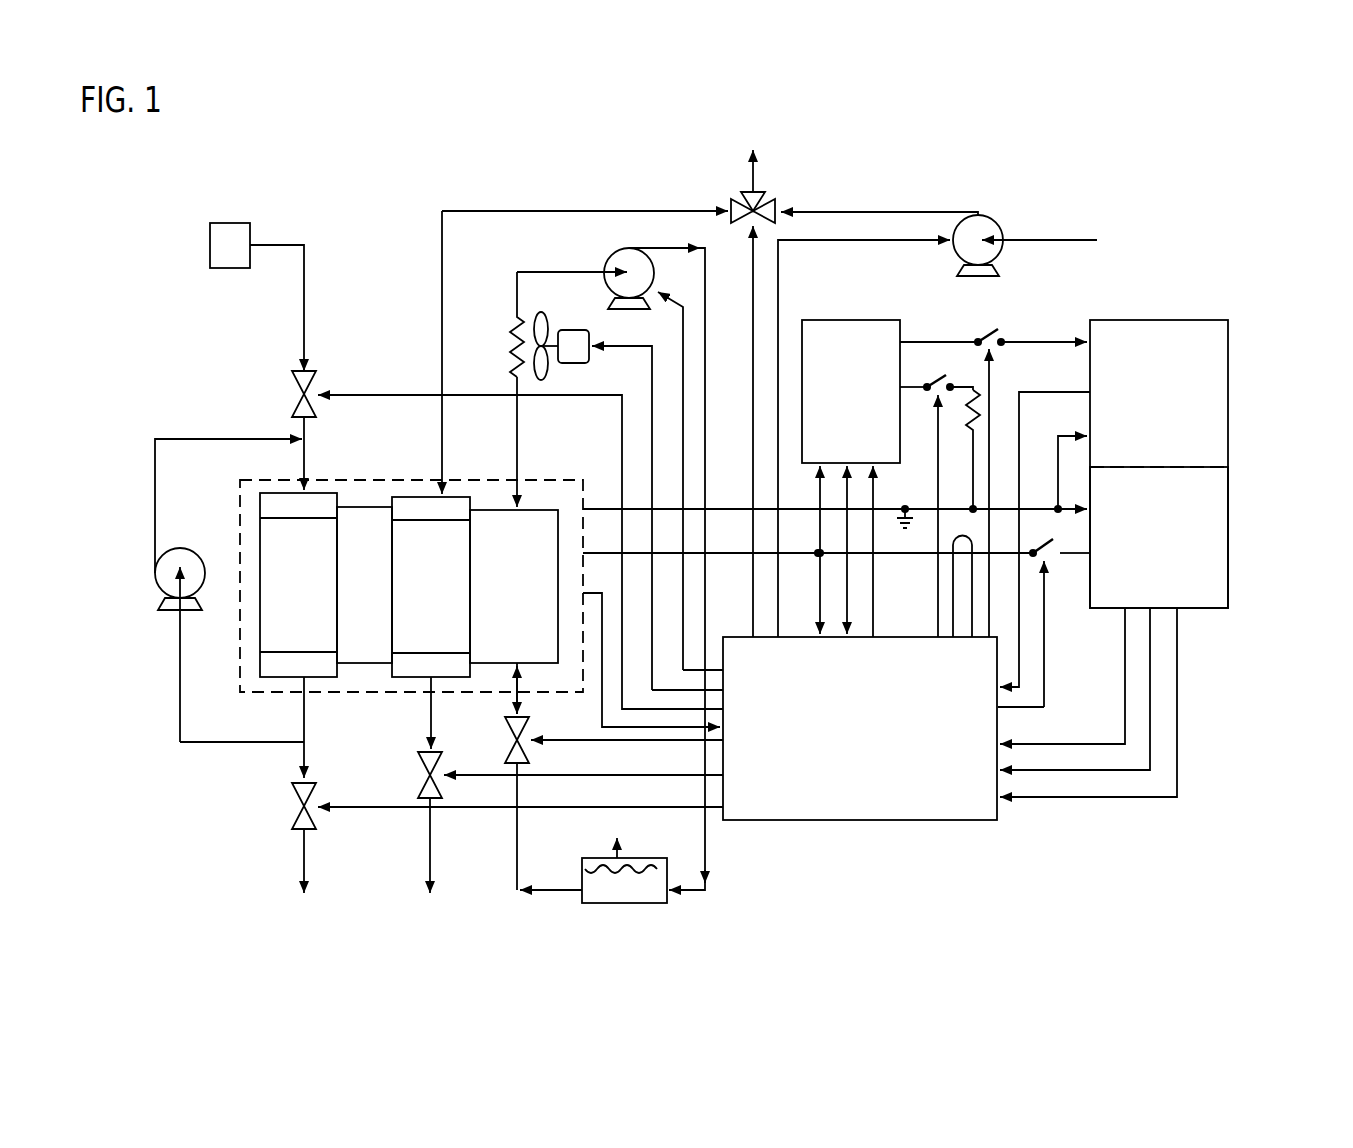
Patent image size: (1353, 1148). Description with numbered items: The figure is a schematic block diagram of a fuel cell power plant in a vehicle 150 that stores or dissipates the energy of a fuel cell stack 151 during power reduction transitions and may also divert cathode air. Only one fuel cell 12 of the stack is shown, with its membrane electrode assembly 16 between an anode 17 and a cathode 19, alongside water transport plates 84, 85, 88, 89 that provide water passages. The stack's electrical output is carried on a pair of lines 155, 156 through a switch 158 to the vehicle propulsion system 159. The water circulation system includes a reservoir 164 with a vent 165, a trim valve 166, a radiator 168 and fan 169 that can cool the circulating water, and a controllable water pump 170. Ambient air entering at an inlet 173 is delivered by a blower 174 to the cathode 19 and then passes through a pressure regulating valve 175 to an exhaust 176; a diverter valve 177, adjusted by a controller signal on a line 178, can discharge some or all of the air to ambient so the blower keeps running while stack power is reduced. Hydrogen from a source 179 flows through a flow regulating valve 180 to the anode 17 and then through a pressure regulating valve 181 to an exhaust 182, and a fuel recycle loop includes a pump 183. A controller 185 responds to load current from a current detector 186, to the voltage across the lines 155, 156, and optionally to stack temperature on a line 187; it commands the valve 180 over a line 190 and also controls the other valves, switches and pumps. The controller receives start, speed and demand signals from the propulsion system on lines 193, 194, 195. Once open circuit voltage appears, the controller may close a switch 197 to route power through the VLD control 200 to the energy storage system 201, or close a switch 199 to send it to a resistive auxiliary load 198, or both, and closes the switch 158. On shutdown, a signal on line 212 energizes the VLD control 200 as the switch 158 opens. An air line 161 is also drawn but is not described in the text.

The fuel cell 12 is at (409, 546).
The membrane electrode assembly 16 is at (353, 599).
The anode 17 is at (287, 599).
The cathode 19 is at (420, 599).
The water transport plate 84 is at (514, 586).
The water transport plate 85 is at (514, 586).
The water transport plate 88 is at (514, 586).
The water transport plate 89 is at (487, 612).
The vehicle 150 is at (1235, 188).
The fuel cell stack 151 is at (343, 481).
The line 155 is at (620, 506).
The line 156 is at (600, 550).
The switch 158 is at (1050, 548).
The vehicle propulsion system 159 is at (1143, 578).
The air supply line 161 is at (880, 241).
The reservoir 164 is at (670, 897).
The vent 165 is at (612, 852).
The trim valve 166 is at (508, 735).
The radiator 168 is at (513, 323).
The fan 169 is at (569, 330).
The water pump 170 is at (607, 258).
The inlet 173 is at (1052, 240).
The blower 174 is at (981, 216).
The pressure regulating valve 175 is at (421, 768).
The exhaust 176 is at (427, 890).
The diverter valve 177 is at (762, 194).
The line 178 is at (750, 278).
The source 179 is at (225, 223).
The flow regulating valve 180 is at (298, 394).
The pressure regulating valve 181 is at (295, 800).
The exhaust 182 is at (298, 890).
The pump 183 is at (158, 578).
The controller 185 is at (844, 751).
The current detector 186 is at (951, 584).
The line 187 is at (600, 713).
The line 190 is at (488, 395).
The line 193 is at (1152, 630).
The line 194 is at (1052, 743).
The line 195 is at (1065, 798).
The switch 197 is at (985, 333).
The auxiliary load 198 is at (982, 397).
The switch 199 is at (929, 382).
The VLD control 200 is at (835, 415).
The energy storage system 201 is at (1143, 435).
The line 212 is at (874, 594).